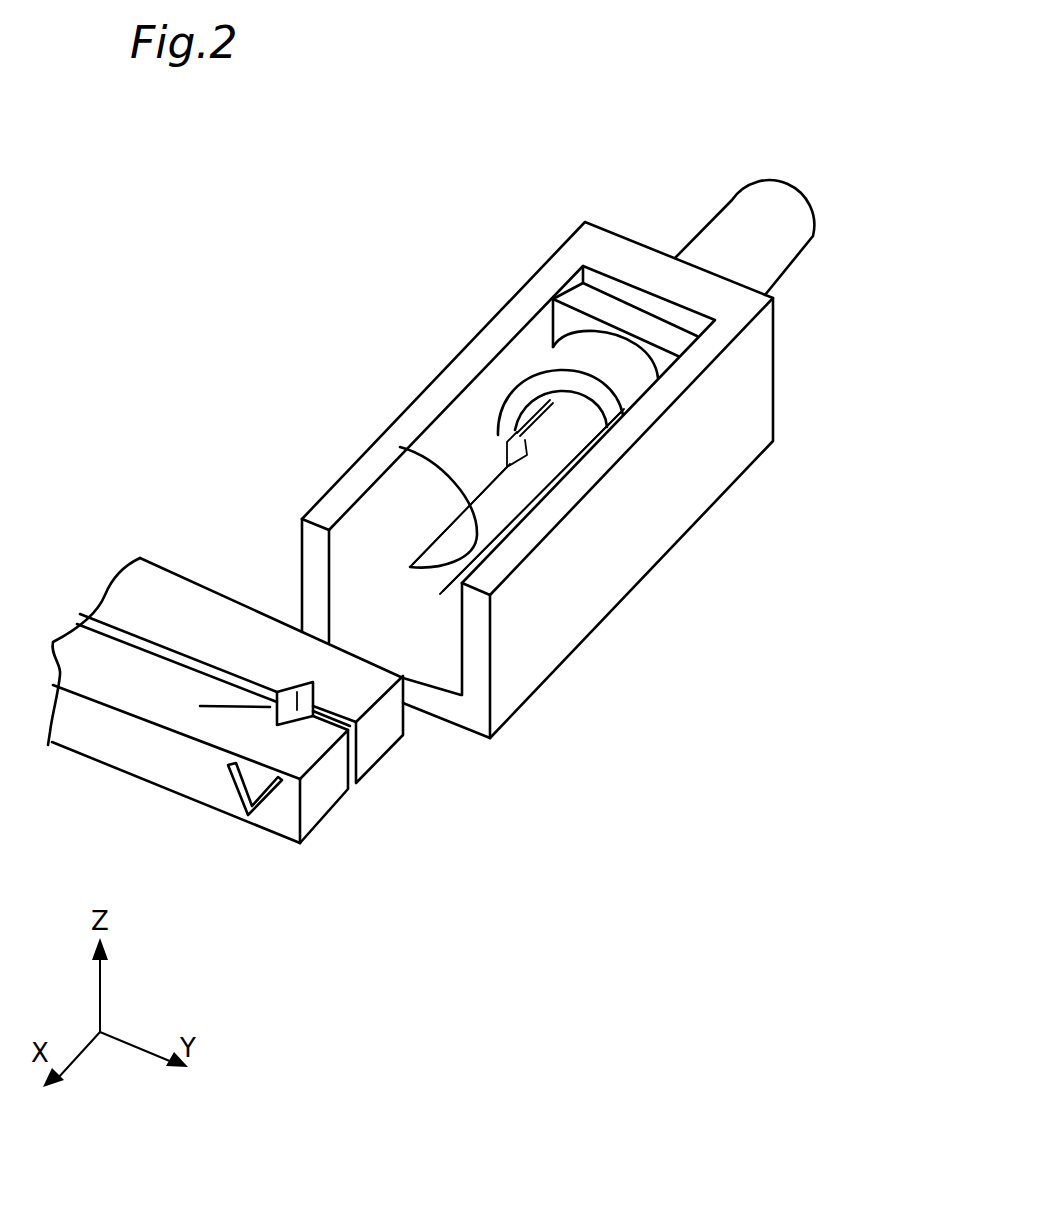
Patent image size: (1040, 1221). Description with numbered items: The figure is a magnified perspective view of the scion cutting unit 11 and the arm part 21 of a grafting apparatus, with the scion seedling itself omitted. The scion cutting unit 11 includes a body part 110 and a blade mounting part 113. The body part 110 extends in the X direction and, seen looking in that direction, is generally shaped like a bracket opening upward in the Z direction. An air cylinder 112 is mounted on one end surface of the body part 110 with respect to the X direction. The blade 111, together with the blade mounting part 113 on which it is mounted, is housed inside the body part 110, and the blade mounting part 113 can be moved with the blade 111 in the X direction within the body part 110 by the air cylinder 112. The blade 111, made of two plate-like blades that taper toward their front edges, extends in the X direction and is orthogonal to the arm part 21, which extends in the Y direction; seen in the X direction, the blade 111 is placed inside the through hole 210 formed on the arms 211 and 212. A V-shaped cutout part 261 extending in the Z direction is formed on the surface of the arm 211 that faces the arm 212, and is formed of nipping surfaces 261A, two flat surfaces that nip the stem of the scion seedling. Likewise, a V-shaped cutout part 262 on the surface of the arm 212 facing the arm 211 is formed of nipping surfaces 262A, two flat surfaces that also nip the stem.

The scion cutting unit 11 is at (628, 636).
The body part 110 is at (598, 242).
The blade 111 is at (400, 447).
The air cylinder 112 is at (776, 187).
The blade mounting part 113 is at (560, 362).
The arm part 21 is at (452, 908).
The through hole 210 is at (233, 806).
The arm 211 is at (383, 728).
The arm 212 is at (328, 786).
The cutout part 261 is at (295, 690).
The nipping surfaces 261A is at (318, 720).
The cutout part 262 is at (255, 712).
The nipping surfaces 262A is at (282, 708).